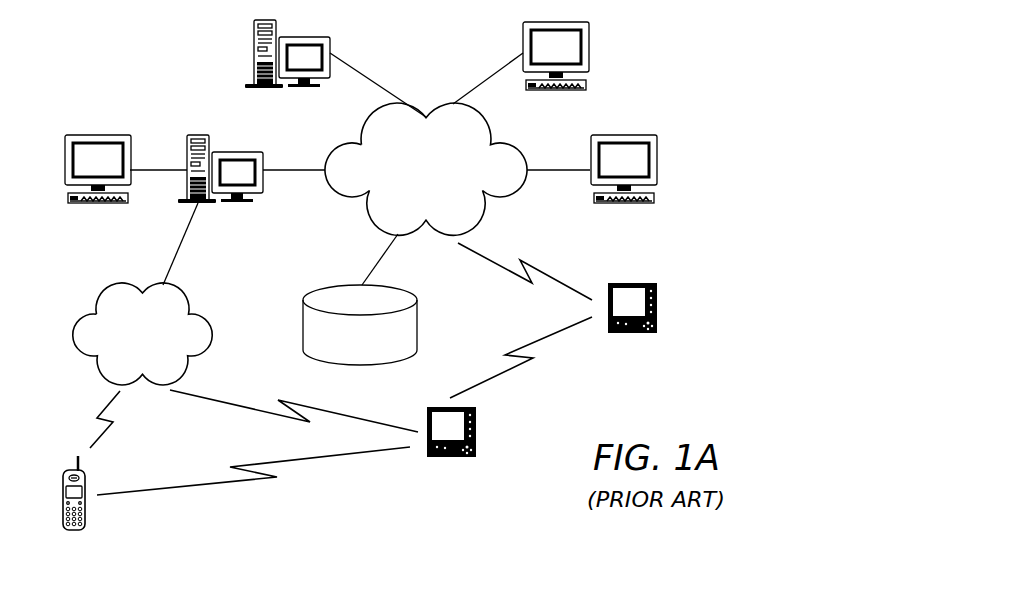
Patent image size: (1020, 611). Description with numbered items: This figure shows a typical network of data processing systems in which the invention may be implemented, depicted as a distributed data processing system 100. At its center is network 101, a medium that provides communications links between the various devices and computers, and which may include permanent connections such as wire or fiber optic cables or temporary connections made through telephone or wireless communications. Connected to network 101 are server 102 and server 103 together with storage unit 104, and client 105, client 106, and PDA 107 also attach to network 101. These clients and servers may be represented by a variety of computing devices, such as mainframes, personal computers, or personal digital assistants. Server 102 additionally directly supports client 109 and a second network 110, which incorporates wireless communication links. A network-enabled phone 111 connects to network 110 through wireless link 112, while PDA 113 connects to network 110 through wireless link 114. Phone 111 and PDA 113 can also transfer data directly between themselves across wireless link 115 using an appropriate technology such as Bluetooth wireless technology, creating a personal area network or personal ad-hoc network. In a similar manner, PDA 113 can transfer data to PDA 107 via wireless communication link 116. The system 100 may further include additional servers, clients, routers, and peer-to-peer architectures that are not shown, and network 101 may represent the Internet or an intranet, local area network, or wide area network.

The distributed data processing system 100 is at (126, 66).
The network 101 is at (442, 190).
The server 102 is at (197, 132).
The server 103 is at (250, 52).
The storage unit 104 is at (302, 323).
The client 105 is at (594, 52).
The client 106 is at (660, 167).
The PDA 107 is at (660, 303).
The client 109 is at (97, 132).
The network 110 is at (158, 356).
The network-enabled phone 111 is at (88, 508).
The wireless link 112 is at (108, 435).
The PDA 113 is at (478, 431).
The wireless link 114 is at (218, 402).
The wireless link 115 is at (190, 484).
The wireless communication link 116 is at (500, 373).